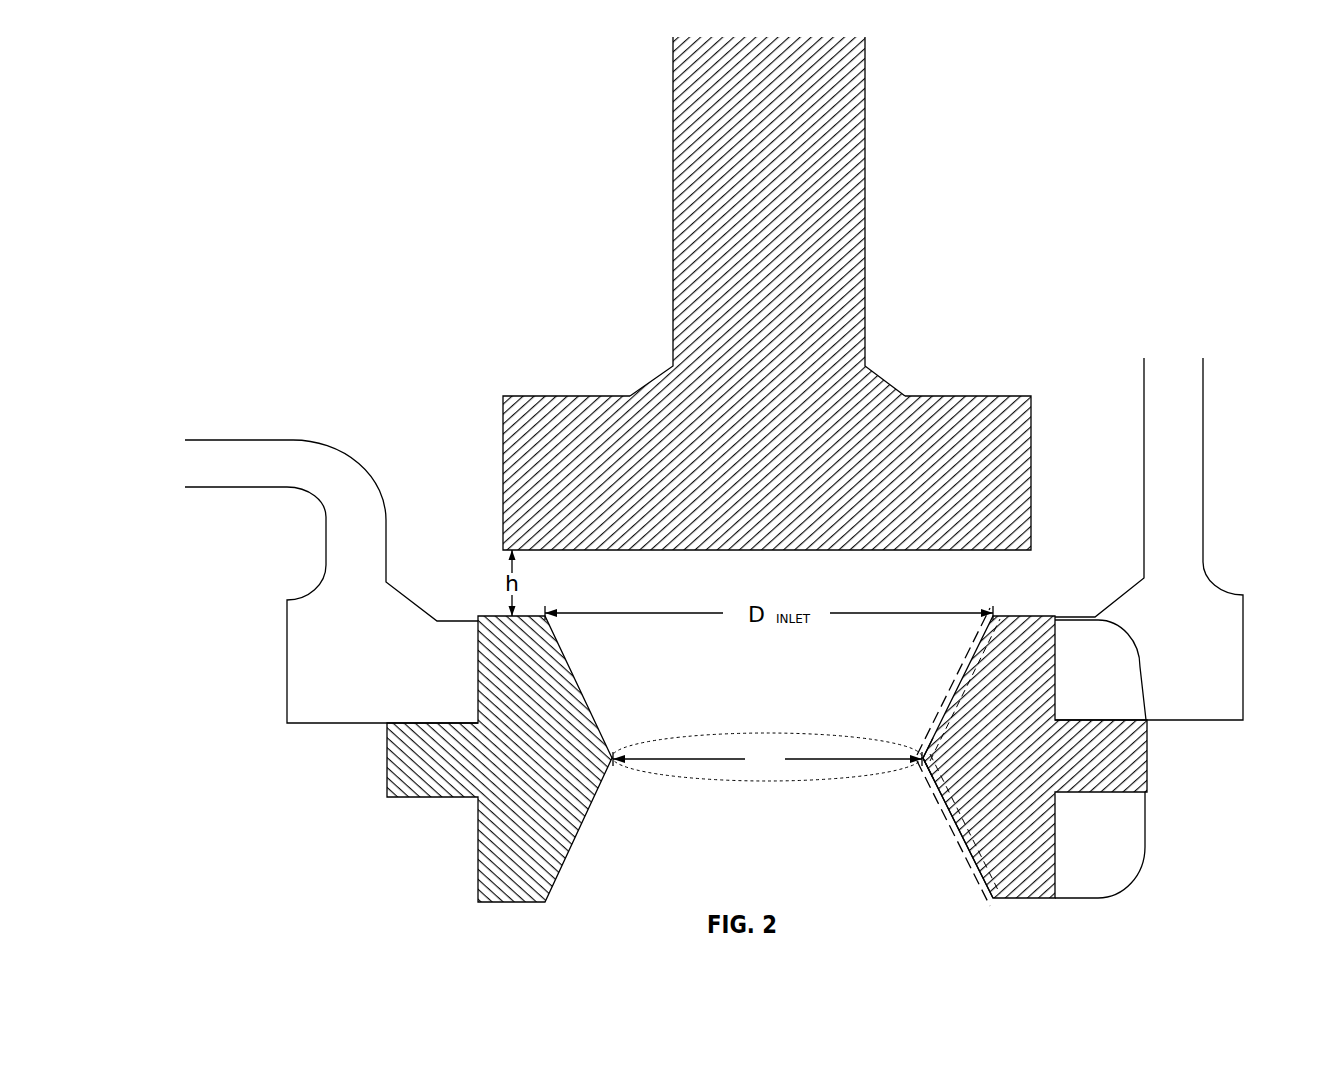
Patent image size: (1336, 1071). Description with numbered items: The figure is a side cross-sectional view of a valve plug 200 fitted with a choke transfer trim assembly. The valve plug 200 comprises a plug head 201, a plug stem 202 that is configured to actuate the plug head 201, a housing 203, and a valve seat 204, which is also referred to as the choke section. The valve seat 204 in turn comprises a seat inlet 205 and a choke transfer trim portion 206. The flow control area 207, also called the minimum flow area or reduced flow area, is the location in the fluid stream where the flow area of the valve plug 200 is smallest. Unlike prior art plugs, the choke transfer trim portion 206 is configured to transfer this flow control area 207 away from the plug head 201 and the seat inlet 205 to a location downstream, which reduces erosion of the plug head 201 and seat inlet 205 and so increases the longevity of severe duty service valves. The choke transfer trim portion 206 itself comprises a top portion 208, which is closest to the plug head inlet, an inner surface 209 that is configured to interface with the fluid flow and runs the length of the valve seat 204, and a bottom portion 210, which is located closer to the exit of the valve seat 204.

The valve plug 200 is at (997, 198).
The plug head 201 is at (1033, 482).
The plug stem 202 is at (843, 180).
The housing 203 is at (1180, 425).
The valve seat 204 is at (1148, 722).
The seat inlet 205 is at (1032, 613).
The choke transfer trim portion 206 is at (988, 805).
The flow control area 207 is at (832, 740).
The top portion 208 is at (963, 661).
The inner surface 209 is at (920, 782).
The bottom portion 210 is at (982, 884).